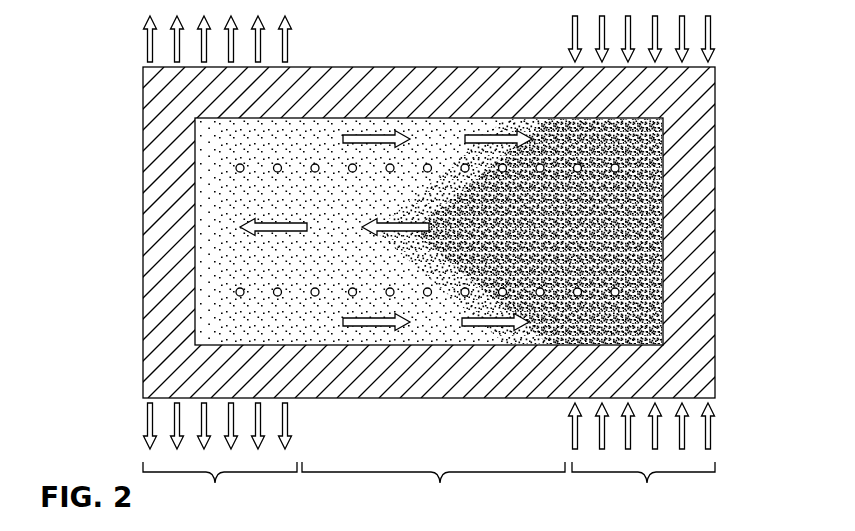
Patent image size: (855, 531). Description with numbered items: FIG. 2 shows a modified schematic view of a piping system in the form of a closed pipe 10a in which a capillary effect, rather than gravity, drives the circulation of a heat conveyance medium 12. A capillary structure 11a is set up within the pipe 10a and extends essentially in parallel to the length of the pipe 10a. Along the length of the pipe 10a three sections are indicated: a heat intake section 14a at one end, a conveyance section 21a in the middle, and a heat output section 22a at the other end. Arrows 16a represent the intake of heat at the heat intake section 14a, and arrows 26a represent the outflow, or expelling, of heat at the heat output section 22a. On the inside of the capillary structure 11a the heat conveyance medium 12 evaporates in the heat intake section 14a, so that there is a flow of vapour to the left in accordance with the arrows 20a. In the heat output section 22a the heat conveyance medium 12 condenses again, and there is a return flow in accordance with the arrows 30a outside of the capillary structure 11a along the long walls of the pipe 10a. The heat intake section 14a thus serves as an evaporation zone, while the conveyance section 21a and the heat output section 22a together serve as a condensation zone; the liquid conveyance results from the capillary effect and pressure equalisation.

The pipe 10a is at (690, 102).
The capillary structure 11a is at (615, 164).
The heat conveyance medium 12 is at (652, 238).
The heat intake section 14a is at (647, 483).
The arrows representing intake of heat 16a is at (712, 36).
The arrows representing vapour flow 20a is at (278, 222).
The conveyance section 21a is at (440, 483).
The heat output section 22a is at (215, 483).
The arrows representing outflow of heat 26a is at (147, 46).
The arrows representing return flow 30a is at (375, 143).